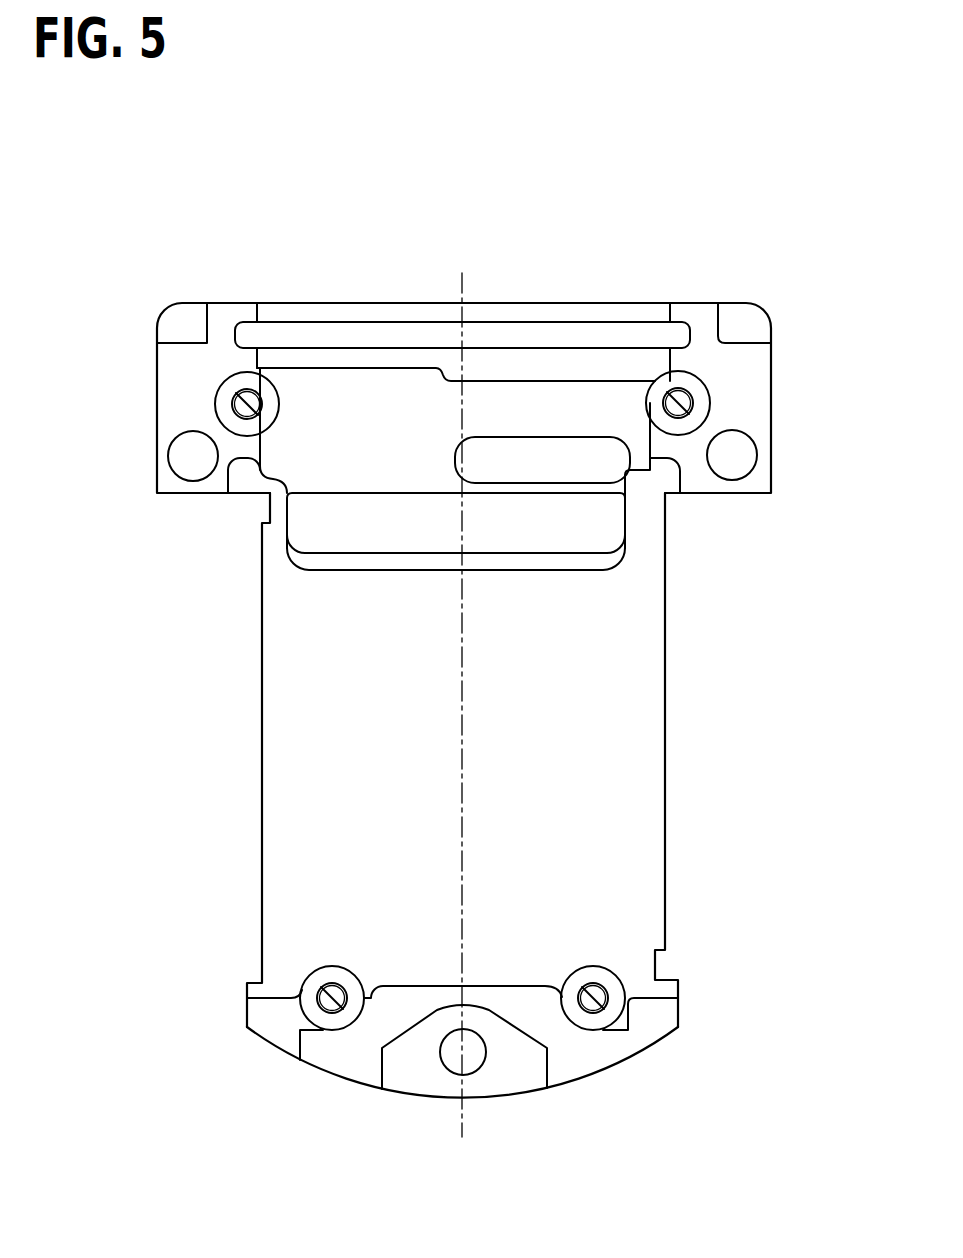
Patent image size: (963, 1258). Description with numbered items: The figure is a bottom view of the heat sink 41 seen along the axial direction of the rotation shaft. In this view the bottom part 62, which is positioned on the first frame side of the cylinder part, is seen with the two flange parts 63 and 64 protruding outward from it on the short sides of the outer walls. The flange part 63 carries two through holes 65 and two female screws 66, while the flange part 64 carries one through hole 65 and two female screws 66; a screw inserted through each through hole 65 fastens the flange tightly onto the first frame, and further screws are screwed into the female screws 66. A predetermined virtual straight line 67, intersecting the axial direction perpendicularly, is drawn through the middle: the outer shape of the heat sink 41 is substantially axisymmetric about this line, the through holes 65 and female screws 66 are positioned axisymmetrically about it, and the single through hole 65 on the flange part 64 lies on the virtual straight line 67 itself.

The heat sink 41 is at (240, 303).
The bottom part 62 is at (542, 732).
The flange part 63 is at (743, 317).
The flange part 64 is at (580, 1062).
The through hole 65 is at (215, 467).
The female screw 66 is at (236, 399).
The virtual straight line 67 is at (465, 286).